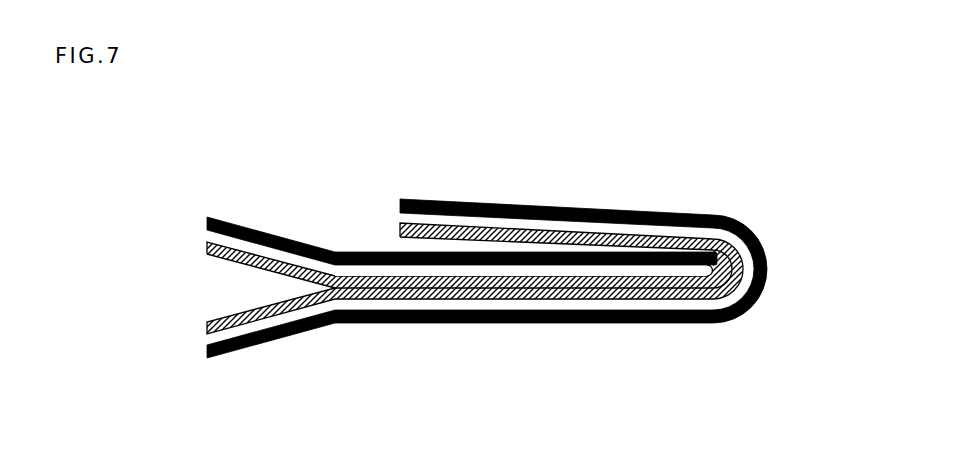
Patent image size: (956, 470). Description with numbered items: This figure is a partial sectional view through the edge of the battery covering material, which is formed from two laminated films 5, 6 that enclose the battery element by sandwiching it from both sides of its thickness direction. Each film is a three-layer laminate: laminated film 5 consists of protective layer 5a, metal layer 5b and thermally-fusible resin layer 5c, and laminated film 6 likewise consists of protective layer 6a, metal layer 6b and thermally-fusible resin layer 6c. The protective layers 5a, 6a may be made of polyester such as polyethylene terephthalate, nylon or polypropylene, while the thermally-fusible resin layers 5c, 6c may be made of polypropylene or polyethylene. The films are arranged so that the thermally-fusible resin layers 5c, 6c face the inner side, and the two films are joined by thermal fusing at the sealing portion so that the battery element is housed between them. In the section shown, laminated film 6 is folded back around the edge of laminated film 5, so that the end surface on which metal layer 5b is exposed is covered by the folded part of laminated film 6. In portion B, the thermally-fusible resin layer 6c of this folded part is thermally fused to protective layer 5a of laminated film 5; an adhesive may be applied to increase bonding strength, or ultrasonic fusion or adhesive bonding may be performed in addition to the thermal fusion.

The laminated film 5 is at (115, 213).
The protective layer 5a is at (207, 222).
The metal layer 5b is at (205, 238).
The thermally-fusible resin layer 5c is at (206, 249).
The laminated film 6 is at (115, 337).
The protective layer 6a is at (207, 349).
The metal layer 6b is at (207, 341).
The thermally-fusible resin layer 6c is at (207, 328).
The portion B is at (454, 236).